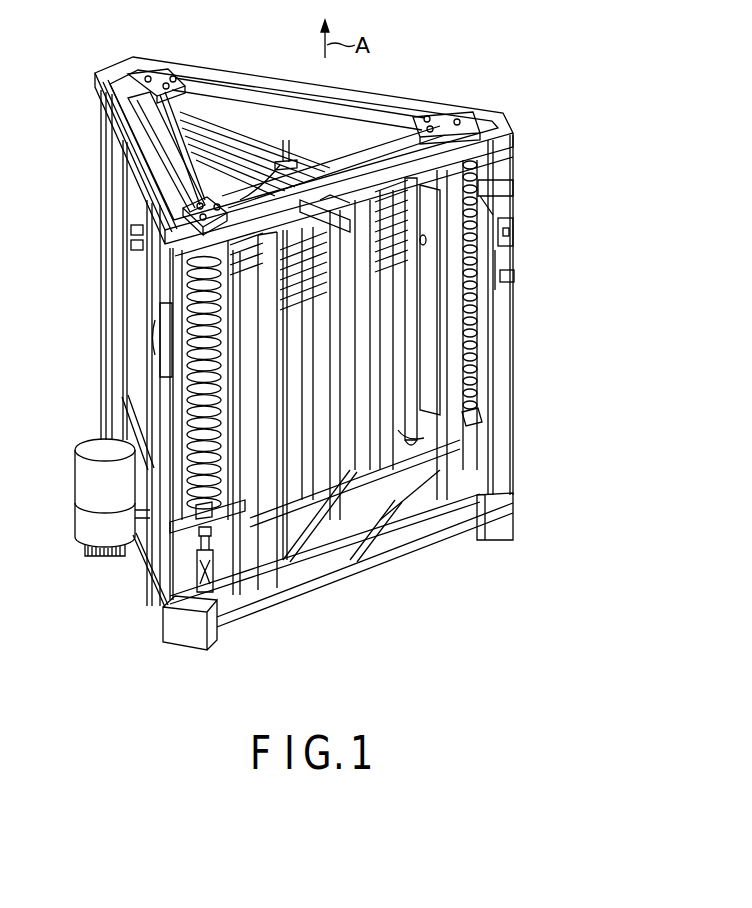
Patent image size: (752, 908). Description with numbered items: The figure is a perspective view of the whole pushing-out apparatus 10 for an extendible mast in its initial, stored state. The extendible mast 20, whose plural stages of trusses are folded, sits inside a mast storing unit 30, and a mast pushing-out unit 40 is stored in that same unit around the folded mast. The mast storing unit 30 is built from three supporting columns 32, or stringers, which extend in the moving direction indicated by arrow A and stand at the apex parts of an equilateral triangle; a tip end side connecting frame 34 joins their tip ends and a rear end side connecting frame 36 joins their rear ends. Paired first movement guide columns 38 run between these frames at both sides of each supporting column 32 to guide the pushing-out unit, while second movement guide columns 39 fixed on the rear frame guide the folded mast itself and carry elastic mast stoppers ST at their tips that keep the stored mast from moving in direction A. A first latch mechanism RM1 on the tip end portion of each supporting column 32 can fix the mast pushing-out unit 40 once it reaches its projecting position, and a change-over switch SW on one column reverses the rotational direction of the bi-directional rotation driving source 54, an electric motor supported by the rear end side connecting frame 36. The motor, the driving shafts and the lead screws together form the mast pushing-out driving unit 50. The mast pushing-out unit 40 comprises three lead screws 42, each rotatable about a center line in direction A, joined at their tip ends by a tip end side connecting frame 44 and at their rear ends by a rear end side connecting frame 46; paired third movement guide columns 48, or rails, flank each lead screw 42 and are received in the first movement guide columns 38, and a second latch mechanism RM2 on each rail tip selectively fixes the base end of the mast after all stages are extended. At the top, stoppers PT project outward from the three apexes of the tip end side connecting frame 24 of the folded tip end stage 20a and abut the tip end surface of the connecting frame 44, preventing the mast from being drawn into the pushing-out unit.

The pushing-out apparatus 10 is at (586, 302).
The extendible mast 20 is at (416, 330).
The tip end stage 20a is at (233, 98).
The tip end side connecting frame 24 is at (287, 110).
The mast storing unit 30 is at (515, 465).
The supporting column 32 is at (160, 602).
The tip end side connecting frame 34 is at (493, 110).
The rear end side connecting frame 36 is at (405, 544).
The first movement guide column 38 is at (102, 278).
The second movement guide column 39 is at (370, 420).
The mast pushing-out unit 40 is at (128, 98).
The lead screw 42 is at (187, 426).
The tip end side connecting frame 44 is at (137, 130).
The rear end side connecting frame 46 is at (227, 548).
The third movement guide column 48 is at (130, 375).
The mast pushing-out driving unit 50 is at (100, 566).
The bi-directional rotation driving source 54 is at (76, 479).
The stopper PT is at (162, 73).
The first latch mechanism RM1 is at (165, 347).
The second latch mechanism RM2 is at (133, 239).
The change-over switch SW is at (517, 232).
The mast stopper ST is at (393, 300).